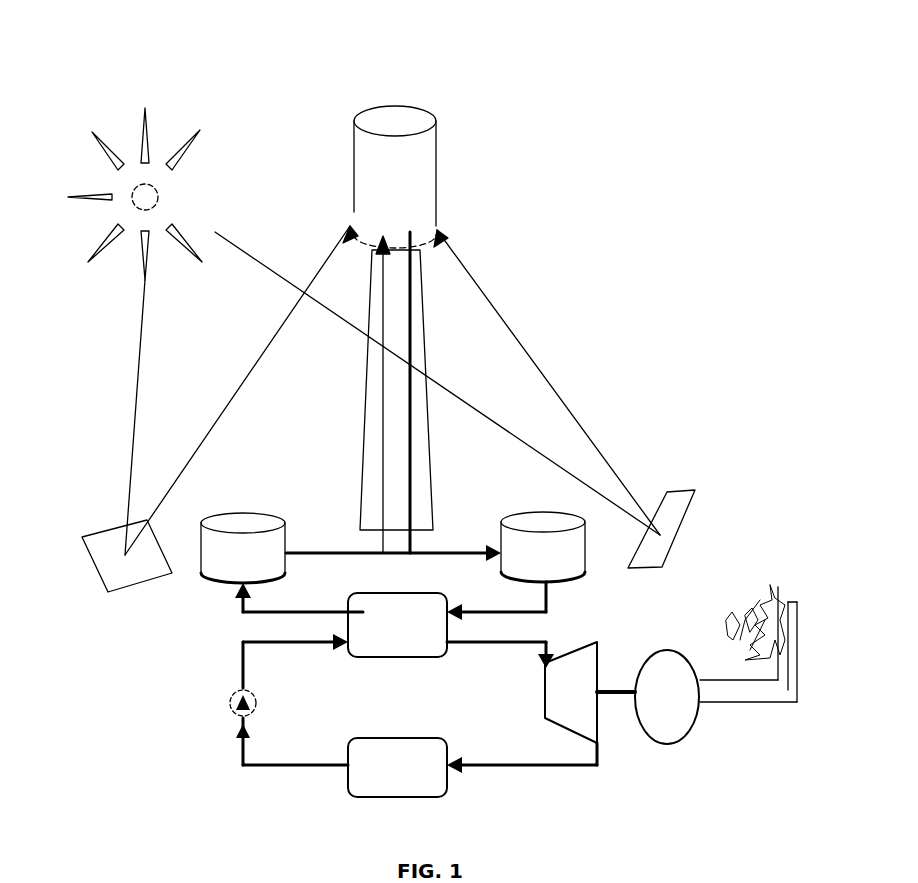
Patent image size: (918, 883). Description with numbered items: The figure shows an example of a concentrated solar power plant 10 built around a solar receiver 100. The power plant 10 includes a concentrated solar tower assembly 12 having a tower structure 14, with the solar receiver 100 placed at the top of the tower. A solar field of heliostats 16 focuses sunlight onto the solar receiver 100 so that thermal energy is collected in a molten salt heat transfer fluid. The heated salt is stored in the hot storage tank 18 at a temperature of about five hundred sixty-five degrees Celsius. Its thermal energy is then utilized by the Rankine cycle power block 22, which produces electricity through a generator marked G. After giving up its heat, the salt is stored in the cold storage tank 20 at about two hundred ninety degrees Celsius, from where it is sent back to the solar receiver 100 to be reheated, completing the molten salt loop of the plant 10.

The concentrated solar power plant 10 is at (655, 72).
The solar receiver 100 is at (445, 118).
The concentrated solar tower assembly 12 is at (348, 368).
The tower structure 14 is at (370, 437).
The heliostats 16 is at (95, 513).
The hot storage tank 18 is at (508, 510).
The cold storage tank 20 is at (203, 592).
The Rankine cycle power block 22 is at (413, 677).